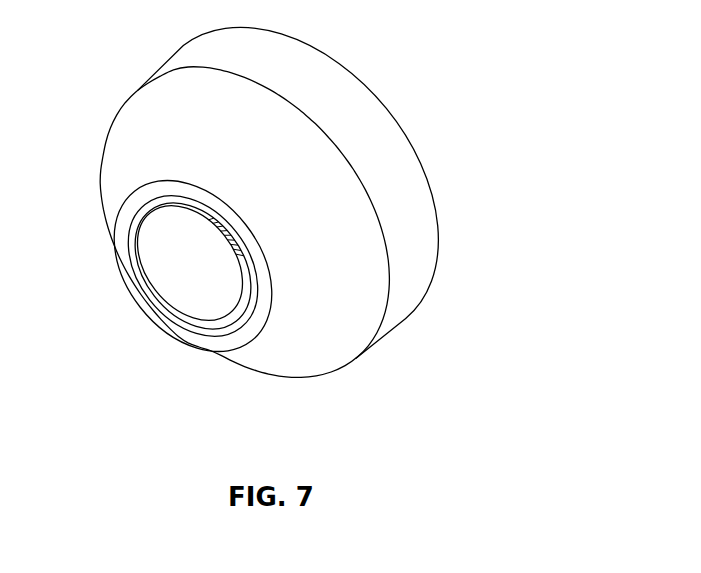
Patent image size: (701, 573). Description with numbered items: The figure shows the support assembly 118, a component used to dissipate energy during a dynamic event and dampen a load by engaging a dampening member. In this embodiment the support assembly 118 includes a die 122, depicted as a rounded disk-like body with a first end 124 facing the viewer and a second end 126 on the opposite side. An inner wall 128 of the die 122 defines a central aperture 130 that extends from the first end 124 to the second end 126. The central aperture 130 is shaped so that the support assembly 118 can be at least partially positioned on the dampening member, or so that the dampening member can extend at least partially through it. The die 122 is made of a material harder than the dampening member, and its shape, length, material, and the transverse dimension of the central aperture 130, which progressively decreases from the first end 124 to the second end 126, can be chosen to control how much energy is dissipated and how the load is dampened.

The support assembly 118 is at (477, 138).
The die 122 is at (372, 312).
The first end 124 is at (433, 202).
The second end 126 is at (137, 272).
The inner wall 128 is at (214, 278).
The central aperture 130 is at (153, 241).